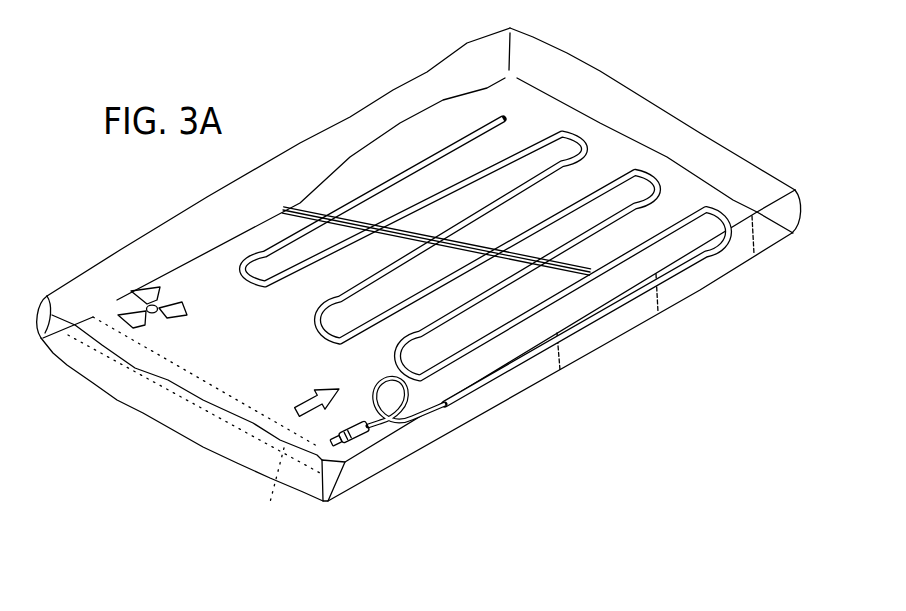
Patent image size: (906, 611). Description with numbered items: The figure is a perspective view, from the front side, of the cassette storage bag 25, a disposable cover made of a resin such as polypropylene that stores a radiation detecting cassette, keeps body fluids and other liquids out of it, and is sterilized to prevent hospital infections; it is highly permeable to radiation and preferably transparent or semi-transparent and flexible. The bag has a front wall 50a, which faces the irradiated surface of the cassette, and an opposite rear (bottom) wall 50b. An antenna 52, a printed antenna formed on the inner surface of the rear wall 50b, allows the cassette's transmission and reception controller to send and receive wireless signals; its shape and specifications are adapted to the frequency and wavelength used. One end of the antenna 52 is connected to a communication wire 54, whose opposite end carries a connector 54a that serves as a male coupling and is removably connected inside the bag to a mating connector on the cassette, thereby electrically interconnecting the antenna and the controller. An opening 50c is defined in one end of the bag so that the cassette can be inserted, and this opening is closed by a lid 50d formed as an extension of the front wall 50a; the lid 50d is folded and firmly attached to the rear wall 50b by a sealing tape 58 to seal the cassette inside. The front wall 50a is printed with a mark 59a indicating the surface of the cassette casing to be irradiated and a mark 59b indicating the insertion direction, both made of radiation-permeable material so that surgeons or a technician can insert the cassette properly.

The cassette storage bag 25 is at (762, 60).
The front wall 50a is at (670, 133).
The rear wall 50b is at (608, 328).
The opening 50c is at (45, 297).
The lid 50d is at (182, 420).
The antenna 52 is at (498, 383).
The communication wire 54 is at (422, 422).
The connector 54a is at (358, 445).
The sealing tape 58 is at (271, 490).
The mark 59a is at (184, 317).
The mark 59b is at (328, 386).